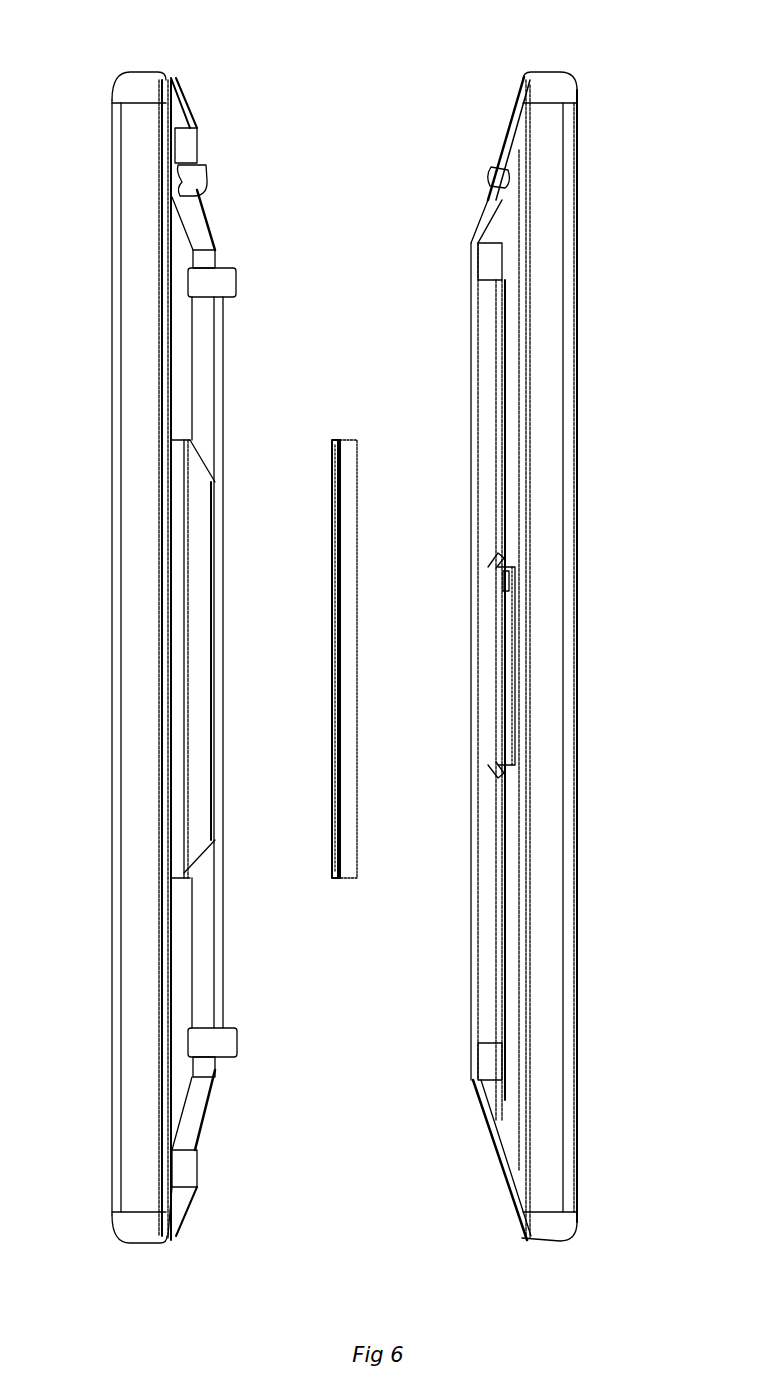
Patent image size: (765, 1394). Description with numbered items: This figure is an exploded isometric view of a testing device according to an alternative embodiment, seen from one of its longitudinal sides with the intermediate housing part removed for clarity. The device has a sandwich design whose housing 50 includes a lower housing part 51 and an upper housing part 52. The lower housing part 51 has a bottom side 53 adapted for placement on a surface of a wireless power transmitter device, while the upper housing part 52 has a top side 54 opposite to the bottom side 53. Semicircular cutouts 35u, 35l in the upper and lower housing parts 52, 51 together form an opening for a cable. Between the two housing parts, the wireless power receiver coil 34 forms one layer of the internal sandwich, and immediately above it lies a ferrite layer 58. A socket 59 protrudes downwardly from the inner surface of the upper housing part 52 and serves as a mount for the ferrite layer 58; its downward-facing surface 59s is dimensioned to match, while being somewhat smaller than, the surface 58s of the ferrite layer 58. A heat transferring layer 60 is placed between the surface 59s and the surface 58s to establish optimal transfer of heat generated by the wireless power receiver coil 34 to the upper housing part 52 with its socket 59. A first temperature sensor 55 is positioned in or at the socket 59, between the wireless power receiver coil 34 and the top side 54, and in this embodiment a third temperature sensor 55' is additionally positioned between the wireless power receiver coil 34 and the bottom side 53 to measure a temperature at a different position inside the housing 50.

The housing 50 is at (125, 48).
The lower housing part 51 is at (550, 82).
The upper housing part 52 is at (130, 80).
The bottom side 53 is at (580, 345).
The top side 54 is at (104, 345).
The semicircular cutout 35u is at (198, 182).
The semicircular cutout 35l is at (500, 182).
The first temperature sensor 55 is at (219, 662).
The third temperature sensor 55' is at (473, 665).
The socket 59 is at (200, 860).
The surface of the socket 59s is at (194, 584).
The ferrite layer 58 is at (337, 440).
The surface of the ferrite layer 58s is at (334, 551).
The heat transferring layer 60 is at (332, 440).
The wireless power receiver coil 34 is at (358, 450).